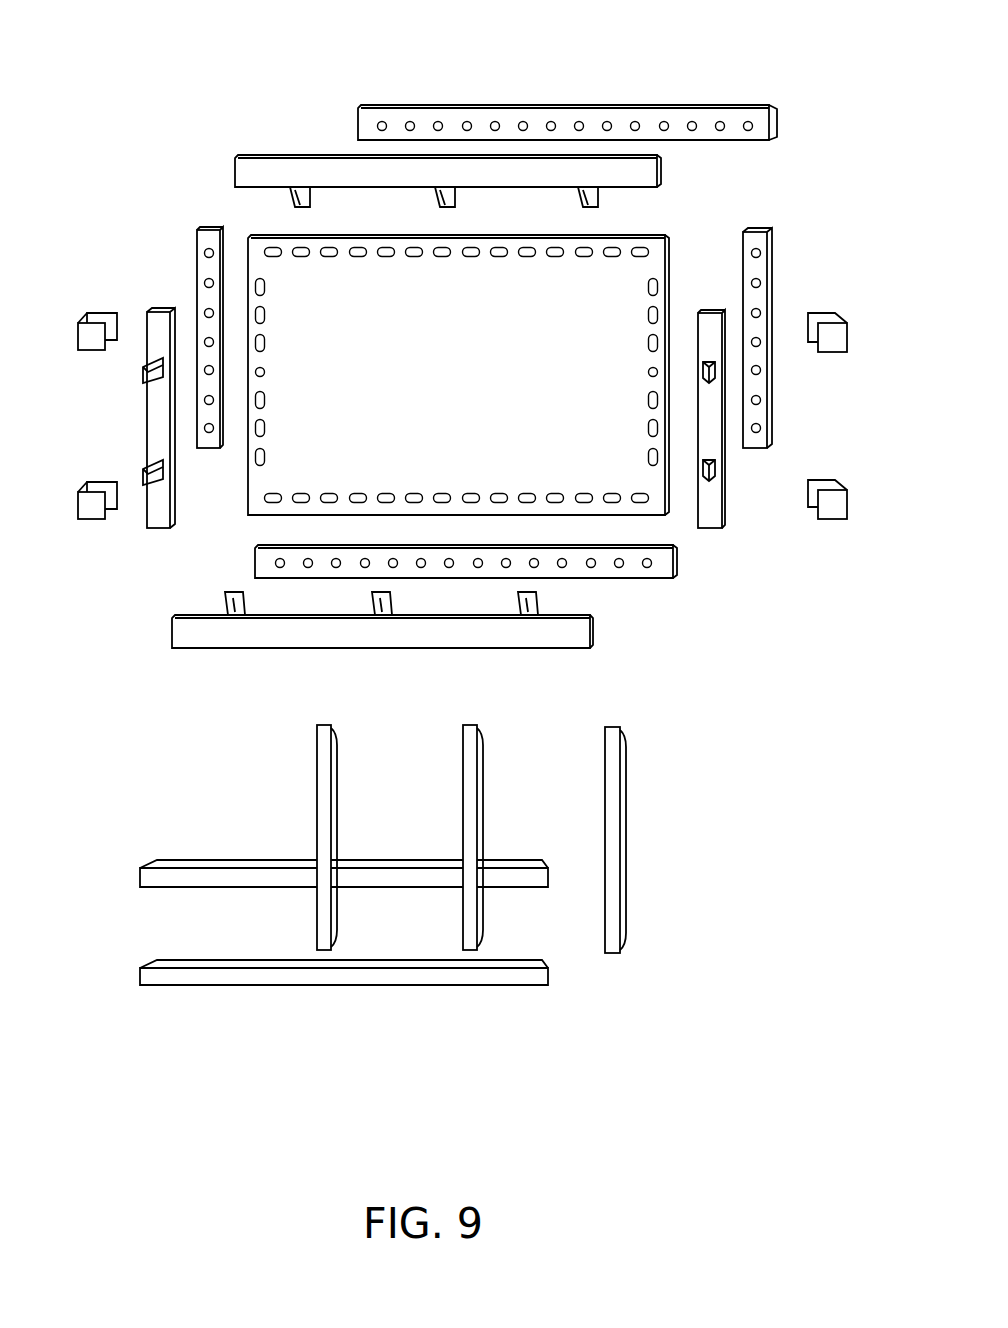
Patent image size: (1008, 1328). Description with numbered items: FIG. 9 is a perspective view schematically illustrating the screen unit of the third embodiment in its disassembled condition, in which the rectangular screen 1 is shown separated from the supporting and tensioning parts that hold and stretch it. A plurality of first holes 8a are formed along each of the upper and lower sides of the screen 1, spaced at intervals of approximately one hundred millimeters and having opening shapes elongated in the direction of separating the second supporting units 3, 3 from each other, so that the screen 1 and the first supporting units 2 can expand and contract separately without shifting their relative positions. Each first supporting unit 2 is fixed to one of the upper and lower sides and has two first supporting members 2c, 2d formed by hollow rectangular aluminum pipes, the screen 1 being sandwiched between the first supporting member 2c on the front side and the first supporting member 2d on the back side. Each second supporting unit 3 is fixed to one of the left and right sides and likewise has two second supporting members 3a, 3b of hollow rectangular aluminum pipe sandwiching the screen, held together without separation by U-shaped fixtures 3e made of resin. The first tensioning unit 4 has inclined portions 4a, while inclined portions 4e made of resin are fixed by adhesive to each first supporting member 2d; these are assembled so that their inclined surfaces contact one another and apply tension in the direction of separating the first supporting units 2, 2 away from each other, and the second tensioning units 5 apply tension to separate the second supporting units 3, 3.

The screen 1 is at (653, 267).
The first supporting unit 2 is at (652, 53).
The first supporting member 2c is at (622, 104).
The first supporting member 2d is at (568, 174).
The second supporting unit 3 is at (223, 170).
The second supporting member 3a is at (213, 228).
The second supporting member 3b is at (160, 310).
The U-shaped fixture 3e is at (92, 342).
The first tensioning unit 4 is at (503, 886).
The inclined portion 4a is at (338, 742).
The inclined portion 4e is at (303, 197).
The second tensioning unit 5 is at (142, 877).
The first hole 8a is at (329, 257).